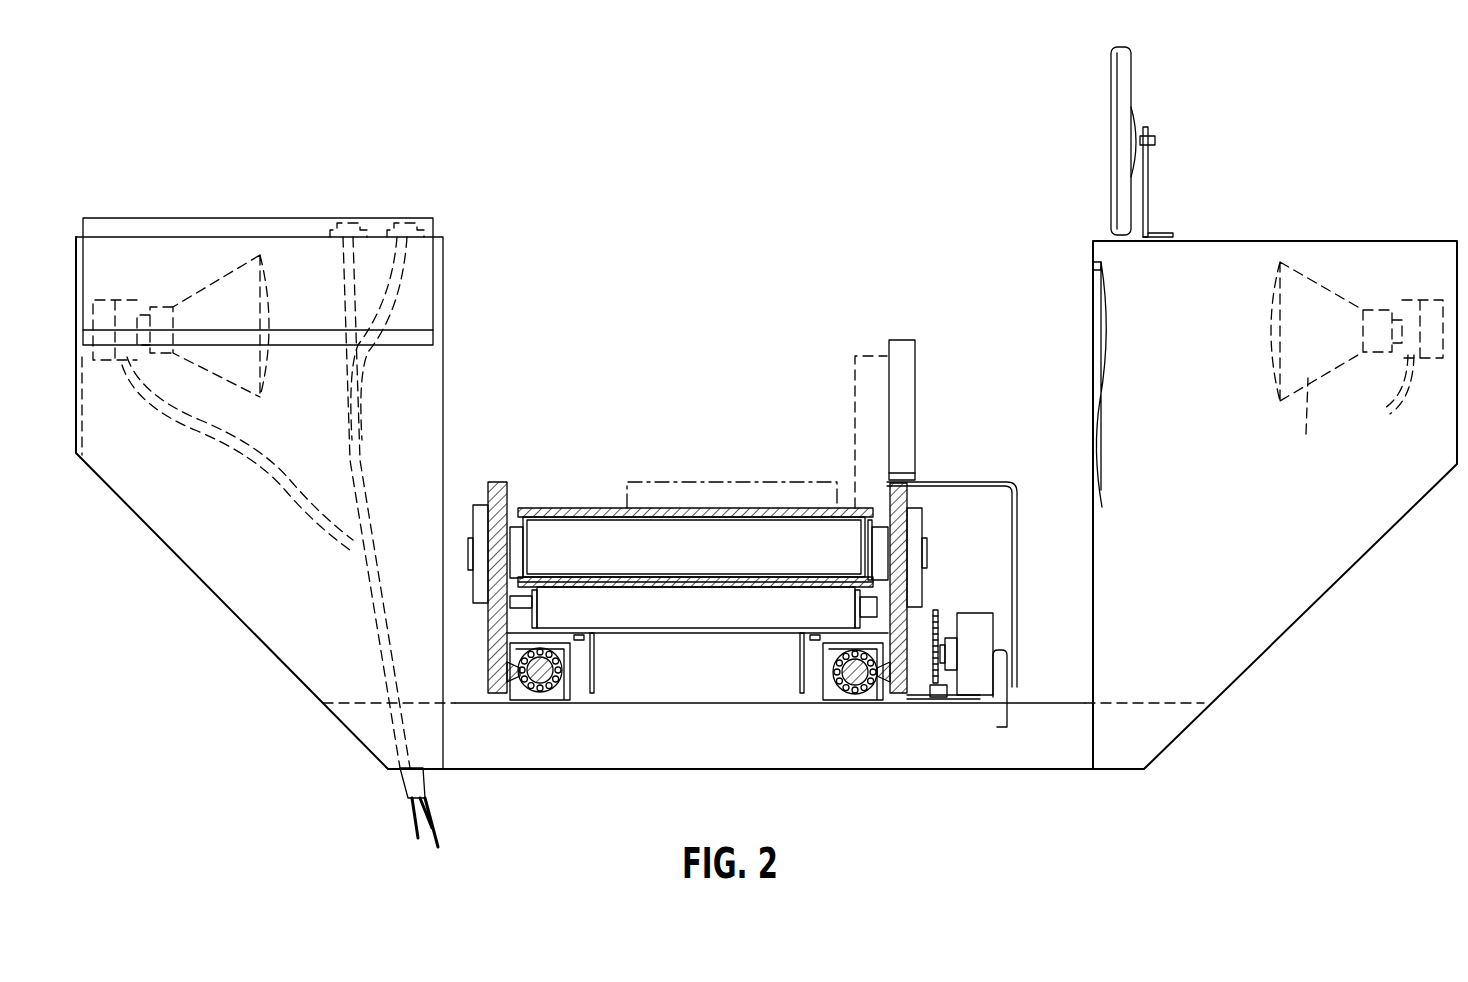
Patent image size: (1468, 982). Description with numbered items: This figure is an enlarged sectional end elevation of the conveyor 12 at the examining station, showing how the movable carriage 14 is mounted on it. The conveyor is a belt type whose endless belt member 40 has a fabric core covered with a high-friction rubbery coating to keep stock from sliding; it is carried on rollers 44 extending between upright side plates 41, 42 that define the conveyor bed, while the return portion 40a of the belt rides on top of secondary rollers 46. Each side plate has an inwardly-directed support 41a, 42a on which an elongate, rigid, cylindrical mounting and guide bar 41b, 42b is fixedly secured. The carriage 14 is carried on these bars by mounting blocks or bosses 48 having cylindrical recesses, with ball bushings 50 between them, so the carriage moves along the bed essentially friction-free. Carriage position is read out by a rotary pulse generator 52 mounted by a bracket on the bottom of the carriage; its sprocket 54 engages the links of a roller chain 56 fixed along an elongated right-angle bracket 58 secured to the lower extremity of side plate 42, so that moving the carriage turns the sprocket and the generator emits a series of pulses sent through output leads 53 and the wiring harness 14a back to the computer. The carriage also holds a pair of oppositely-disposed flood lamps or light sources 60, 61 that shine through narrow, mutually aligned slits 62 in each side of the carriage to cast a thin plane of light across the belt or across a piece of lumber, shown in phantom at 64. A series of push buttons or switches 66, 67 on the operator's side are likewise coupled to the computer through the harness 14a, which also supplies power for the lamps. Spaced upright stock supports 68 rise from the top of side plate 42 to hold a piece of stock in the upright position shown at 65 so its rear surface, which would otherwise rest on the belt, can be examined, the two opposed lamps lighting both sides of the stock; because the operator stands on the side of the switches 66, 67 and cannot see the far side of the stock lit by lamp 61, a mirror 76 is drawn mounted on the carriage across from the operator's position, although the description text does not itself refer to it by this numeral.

The conveyor 12 is at (650, 425).
The movable carriage 14 is at (258, 595).
The wiring harness 14a is at (423, 782).
The endless belt member 40 is at (573, 507).
The return portion of the belt 40a is at (740, 577).
The upright side plate 41 is at (498, 481).
The inwardly-directed support 41a is at (506, 679).
The cylindrical mounting and guide bar 41b is at (543, 690).
The upright side plate 42 is at (905, 497).
The inwardly-directed support 42a is at (883, 686).
The cylindrical mounting and guide bar 42b is at (852, 692).
The rollers 44 is at (638, 551).
The secondary rollers 46 is at (685, 611).
The mounting blocks or bosses 48 is at (560, 697).
The ball bushings 50 is at (560, 665).
The rotary pulse generator 52 is at (977, 613).
The output leads 53 is at (1008, 698).
The sprocket 54 is at (938, 608).
The roller chain 56 is at (946, 698).
The right-angle bracket 58 is at (922, 698).
The flood lamp or light source 60 is at (226, 370).
The flood lamp or light source 61 is at (1357, 360).
The slits 62 is at (443, 364).
The piece of lumber (phantom position) 64 is at (722, 481).
The piece of stock (upright position) 65 is at (855, 387).
The push button or switch 66 is at (351, 221).
The push button or switch 67 is at (412, 221).
The upright stock supports 68 is at (903, 340).
The mirror 76 is at (1110, 110).